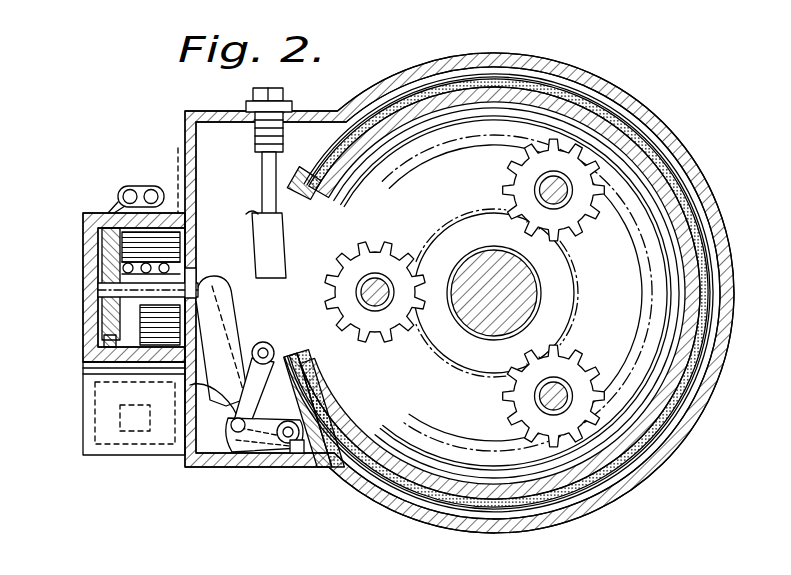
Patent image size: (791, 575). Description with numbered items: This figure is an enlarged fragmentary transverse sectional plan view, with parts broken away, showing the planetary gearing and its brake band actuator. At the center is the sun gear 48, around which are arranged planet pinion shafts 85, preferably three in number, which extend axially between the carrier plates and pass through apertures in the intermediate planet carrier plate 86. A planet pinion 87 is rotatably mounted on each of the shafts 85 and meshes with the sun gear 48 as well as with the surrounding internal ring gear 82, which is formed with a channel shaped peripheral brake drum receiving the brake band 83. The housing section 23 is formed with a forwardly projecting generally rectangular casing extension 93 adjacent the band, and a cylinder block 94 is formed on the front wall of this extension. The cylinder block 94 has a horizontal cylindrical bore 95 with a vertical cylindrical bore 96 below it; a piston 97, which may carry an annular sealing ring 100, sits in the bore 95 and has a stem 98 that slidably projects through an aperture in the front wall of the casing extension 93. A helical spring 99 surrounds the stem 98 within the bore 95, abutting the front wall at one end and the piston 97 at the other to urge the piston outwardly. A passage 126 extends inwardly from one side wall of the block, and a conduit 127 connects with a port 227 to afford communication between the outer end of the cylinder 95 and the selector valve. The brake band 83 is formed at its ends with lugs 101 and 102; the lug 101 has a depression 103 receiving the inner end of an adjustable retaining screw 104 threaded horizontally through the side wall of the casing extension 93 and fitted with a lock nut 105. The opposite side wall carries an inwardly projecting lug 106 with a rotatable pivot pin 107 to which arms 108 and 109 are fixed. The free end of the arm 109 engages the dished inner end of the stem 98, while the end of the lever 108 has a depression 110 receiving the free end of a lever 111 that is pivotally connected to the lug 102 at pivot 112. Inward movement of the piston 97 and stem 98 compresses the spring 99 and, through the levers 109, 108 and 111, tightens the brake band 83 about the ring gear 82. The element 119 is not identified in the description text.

The housing section 23 is at (572, 520).
The sun gear 48 is at (428, 322).
The internal ring gear 82 is at (392, 466).
The brake band 83 is at (430, 506).
The planet pinion shafts 85 is at (378, 288).
The intermediate planet carrier plate 86 is at (476, 186).
The planet pinion 87 is at (474, 293).
The casing extension 93 is at (214, 468).
The cylinder block 94 is at (83, 218).
The horizontal cylindrical bore 95 is at (160, 232).
The vertical cylindrical bore 96 is at (178, 165).
The piston 97 is at (104, 262).
The stem 98 is at (198, 276).
The helical spring 99 is at (150, 345).
The annular sealing ring 100 is at (85, 368).
The lug 101 is at (262, 232).
The lug 102 is at (258, 338).
The depression 103 is at (252, 214).
The adjustable retaining screw 104 is at (262, 168).
The lock nut 105 is at (284, 100).
The inwardly projecting lug 106 is at (298, 454).
The pivot pin 107 is at (284, 446).
The arm 108 is at (254, 452).
The arm 109 is at (218, 302).
The depression 110 is at (232, 427).
The lever 111 is at (244, 382).
The pivotal connection 112 is at (257, 350).
The arm 119 is at (118, 199).
The passage 126 is at (104, 340).
The conduit 127 is at (141, 186).
The port 227 is at (100, 290).